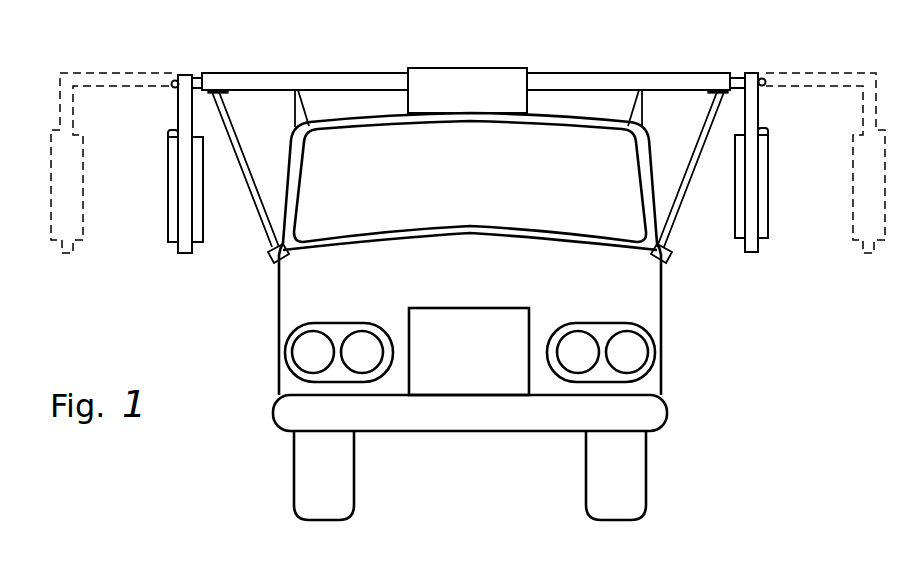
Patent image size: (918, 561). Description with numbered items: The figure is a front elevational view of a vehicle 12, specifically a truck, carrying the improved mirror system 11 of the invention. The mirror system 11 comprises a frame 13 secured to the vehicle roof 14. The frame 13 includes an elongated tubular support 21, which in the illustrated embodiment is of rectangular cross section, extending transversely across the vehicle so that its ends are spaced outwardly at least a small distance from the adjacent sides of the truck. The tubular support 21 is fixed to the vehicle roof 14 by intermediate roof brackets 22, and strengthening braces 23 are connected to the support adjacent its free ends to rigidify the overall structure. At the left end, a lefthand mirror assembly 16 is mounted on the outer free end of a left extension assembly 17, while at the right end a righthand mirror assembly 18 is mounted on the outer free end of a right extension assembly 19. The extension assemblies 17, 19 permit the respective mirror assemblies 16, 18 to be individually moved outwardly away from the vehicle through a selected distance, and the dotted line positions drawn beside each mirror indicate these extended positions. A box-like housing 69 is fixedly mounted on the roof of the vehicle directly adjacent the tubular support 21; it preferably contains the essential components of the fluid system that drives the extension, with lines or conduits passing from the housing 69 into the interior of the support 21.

The mirror system 11 is at (468, 167).
The vehicle 12 is at (518, 313).
The frame 13 is at (294, 74).
The vehicle roof 14 is at (345, 118).
The lefthand mirror assembly 16 is at (766, 228).
The left extension assembly 17 is at (738, 74).
The righthand mirror assembly 18 is at (173, 228).
The right extension assembly 19 is at (200, 73).
The tubular support 21 is at (600, 78).
The roof brackets 22 is at (296, 118).
The strengthening braces 23 is at (268, 228).
The housing 69 is at (493, 78).